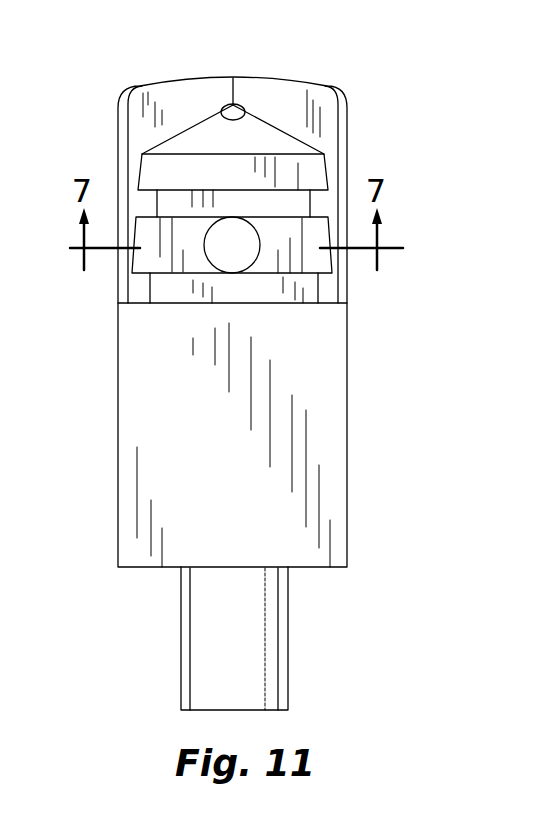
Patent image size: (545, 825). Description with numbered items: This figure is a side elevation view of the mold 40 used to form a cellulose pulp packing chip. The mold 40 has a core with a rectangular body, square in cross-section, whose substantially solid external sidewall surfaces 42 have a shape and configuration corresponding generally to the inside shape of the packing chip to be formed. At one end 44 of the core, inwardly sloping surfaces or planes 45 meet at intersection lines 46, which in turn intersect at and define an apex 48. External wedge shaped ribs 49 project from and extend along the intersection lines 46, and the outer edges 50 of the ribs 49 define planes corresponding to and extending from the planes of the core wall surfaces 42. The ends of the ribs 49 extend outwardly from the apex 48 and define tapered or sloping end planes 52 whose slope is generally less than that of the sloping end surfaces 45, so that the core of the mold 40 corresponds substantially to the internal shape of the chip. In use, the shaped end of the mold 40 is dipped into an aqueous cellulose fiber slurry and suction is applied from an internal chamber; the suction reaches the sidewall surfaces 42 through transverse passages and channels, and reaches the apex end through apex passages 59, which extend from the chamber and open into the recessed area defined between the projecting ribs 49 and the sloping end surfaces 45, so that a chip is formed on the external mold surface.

The mold 40 is at (220, 356).
The external sidewall surfaces 42 is at (205, 482).
The end 44 is at (294, 76).
The inwardly sloping surfaces 45 is at (270, 140).
The intersection lines 46 is at (182, 132).
The apex 48 is at (228, 105).
The wedge shaped ribs 49 is at (325, 145).
The outer edges 50 is at (343, 180).
The sloping end planes 52 is at (168, 82).
The apex passages 59 is at (245, 113).